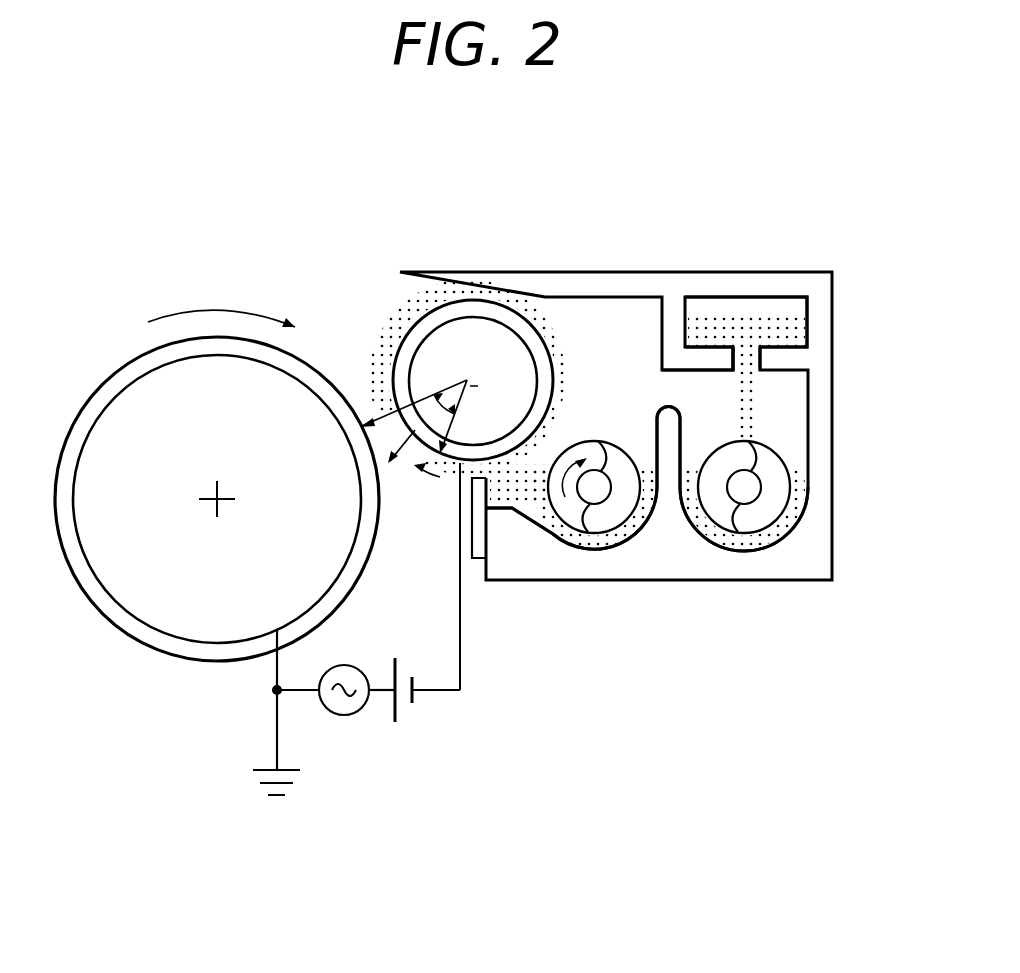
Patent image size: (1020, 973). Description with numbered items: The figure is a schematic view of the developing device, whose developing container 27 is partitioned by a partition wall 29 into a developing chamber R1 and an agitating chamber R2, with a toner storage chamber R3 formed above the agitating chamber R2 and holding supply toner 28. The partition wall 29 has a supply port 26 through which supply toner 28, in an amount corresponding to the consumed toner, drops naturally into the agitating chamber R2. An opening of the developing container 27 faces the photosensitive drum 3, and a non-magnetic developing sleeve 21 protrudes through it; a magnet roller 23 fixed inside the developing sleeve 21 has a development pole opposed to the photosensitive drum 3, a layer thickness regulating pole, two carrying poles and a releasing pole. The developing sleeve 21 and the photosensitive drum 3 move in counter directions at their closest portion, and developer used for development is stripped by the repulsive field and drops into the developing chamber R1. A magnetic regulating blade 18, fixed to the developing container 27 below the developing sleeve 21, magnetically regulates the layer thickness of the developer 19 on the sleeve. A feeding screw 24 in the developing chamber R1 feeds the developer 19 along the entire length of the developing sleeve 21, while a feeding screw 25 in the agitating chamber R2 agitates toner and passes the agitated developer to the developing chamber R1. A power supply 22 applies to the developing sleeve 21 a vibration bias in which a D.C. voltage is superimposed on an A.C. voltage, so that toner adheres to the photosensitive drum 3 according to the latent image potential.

The photosensitive drum 3 is at (198, 656).
The regulating blade 18 is at (477, 560).
The developer 19 is at (522, 492).
The developing sleeve 21 is at (396, 346).
The power supply 22 is at (380, 728).
The magnet roller 23 is at (440, 346).
The feeding screw 24 is at (575, 515).
The feeding screw 25 is at (723, 516).
The supply port 26 is at (752, 362).
The developing container 27 is at (823, 504).
The supply toner 28 is at (745, 330).
The partition wall 29 is at (670, 500).
The developing chamber R1 is at (621, 418).
The agitating chamber R2 is at (726, 418).
The toner storage chamber R3 is at (697, 300).